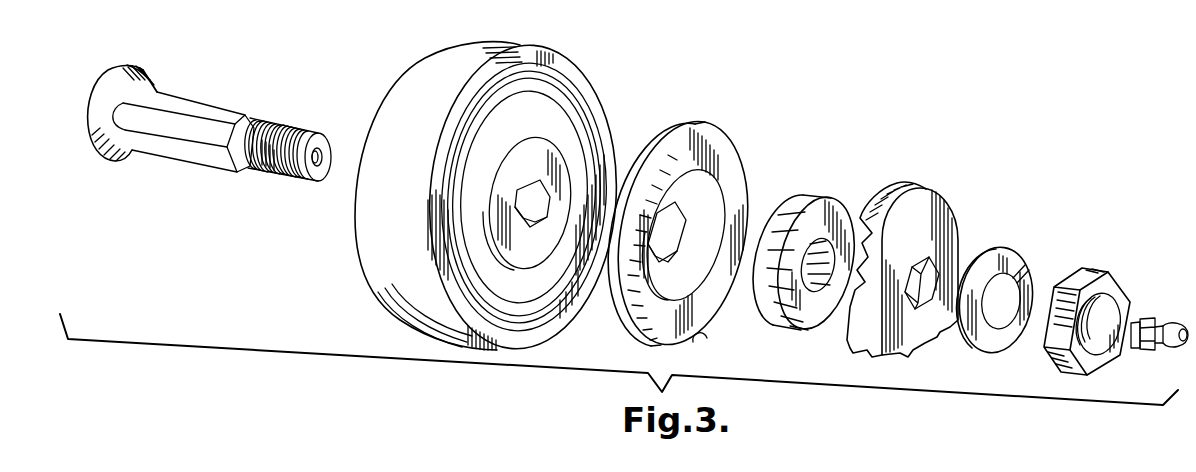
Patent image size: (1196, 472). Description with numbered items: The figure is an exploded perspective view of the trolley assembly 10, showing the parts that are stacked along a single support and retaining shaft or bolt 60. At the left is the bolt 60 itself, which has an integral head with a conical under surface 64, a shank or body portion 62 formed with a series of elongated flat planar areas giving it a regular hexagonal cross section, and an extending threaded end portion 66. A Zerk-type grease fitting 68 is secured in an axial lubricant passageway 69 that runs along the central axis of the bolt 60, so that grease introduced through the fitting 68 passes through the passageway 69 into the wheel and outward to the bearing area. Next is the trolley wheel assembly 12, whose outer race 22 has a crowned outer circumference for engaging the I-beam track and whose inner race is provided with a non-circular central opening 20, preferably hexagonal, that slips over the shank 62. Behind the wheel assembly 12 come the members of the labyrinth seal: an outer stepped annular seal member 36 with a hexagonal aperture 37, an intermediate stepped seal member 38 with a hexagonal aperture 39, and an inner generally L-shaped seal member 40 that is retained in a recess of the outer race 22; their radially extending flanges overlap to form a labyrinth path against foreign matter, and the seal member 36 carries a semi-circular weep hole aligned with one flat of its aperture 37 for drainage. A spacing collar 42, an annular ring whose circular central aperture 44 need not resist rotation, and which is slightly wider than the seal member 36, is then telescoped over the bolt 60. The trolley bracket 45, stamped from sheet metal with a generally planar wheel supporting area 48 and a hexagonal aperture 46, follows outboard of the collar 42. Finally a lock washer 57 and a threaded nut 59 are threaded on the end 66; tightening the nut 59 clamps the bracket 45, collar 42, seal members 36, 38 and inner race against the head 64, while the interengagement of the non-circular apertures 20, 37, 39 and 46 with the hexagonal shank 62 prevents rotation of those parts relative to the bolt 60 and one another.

The trolley assembly 10 is at (201, 139).
The trolley wheel assembly 12 is at (497, 190).
The central opening 20 is at (495, 240).
The outer race 22 is at (490, 197).
The outer shield or seal member 36 is at (691, 230).
The hexagonal aperture 37 is at (683, 208).
The intermediate shield or seal member 38 is at (582, 130).
The hexagonal aperture 39 is at (545, 190).
The inner seal or shield member 40 is at (567, 97).
The spacing member or collar 42 is at (804, 250).
The washer bore 44 is at (813, 297).
The trolley bracket 45 is at (921, 263).
The hexagonal aperture 46 is at (934, 313).
The wheel supporting area 48 is at (950, 206).
The lock washer 57 is at (1007, 251).
The threaded nut 59 is at (1109, 272).
The support and retaining shaft or bolt 60 is at (141, 76).
The shank or body portion 62 is at (198, 108).
The bolt head 64 is at (102, 128).
The threaded end portion 66 is at (270, 172).
The grease fitting 68 is at (1170, 320).
The lubricant passageway 69 is at (327, 150).